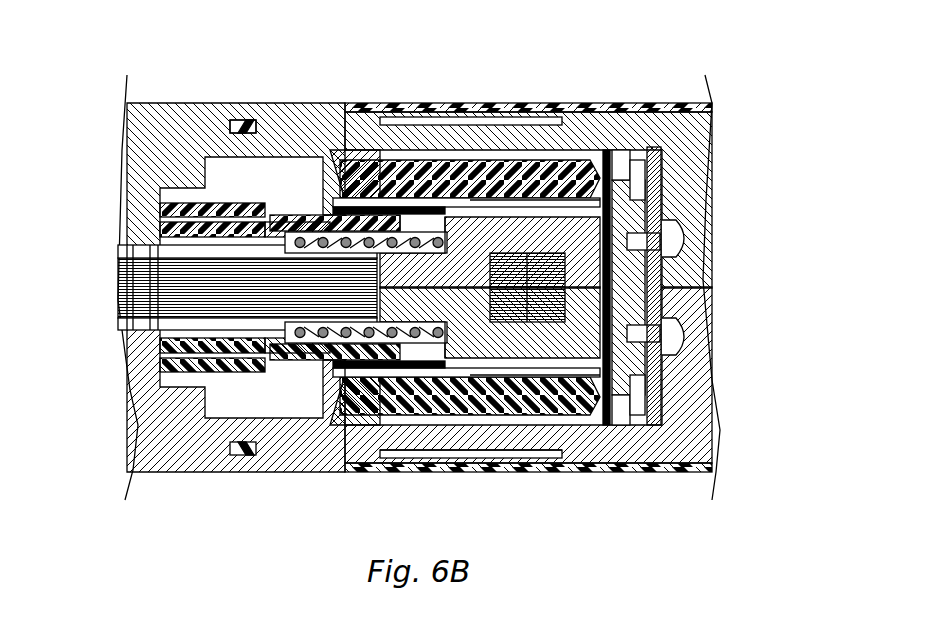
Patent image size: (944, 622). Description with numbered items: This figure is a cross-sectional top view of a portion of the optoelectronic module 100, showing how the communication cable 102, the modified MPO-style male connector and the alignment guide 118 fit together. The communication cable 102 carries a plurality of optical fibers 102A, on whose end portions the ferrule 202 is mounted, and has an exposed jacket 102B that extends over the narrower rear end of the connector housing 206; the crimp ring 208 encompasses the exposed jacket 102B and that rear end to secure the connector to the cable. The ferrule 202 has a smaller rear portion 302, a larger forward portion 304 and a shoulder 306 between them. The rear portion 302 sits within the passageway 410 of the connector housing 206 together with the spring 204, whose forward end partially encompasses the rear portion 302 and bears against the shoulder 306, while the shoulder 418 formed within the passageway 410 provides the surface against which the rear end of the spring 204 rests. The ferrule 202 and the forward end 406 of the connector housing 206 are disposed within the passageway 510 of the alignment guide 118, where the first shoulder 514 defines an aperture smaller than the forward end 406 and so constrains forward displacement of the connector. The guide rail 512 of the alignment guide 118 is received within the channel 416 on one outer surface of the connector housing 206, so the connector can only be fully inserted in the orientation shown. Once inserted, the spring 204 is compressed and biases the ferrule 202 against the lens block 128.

The optoelectronic module 100 is at (632, 42).
The communication cable 102 is at (70, 392).
The optical fibers 102A is at (132, 366).
The exposed jacket 102B is at (130, 338).
The alignment guide 118 is at (349, 150).
The lens block 128 is at (633, 180).
The ferrule 202 is at (540, 212).
The spring 204 is at (418, 340).
The connector housing 206 is at (302, 213).
The crimp ring 208 is at (254, 140).
The rear portion 302 is at (358, 410).
The forward portion 304 is at (570, 380).
The shoulder 306 is at (457, 345).
The forward end 406 is at (504, 350).
The passageway 410 is at (430, 225).
The channel 416 is at (433, 218).
The shoulder 418 is at (310, 205).
The passageway 510 is at (602, 185).
The guide rail 512 is at (372, 212).
The first shoulder 514 is at (478, 200).